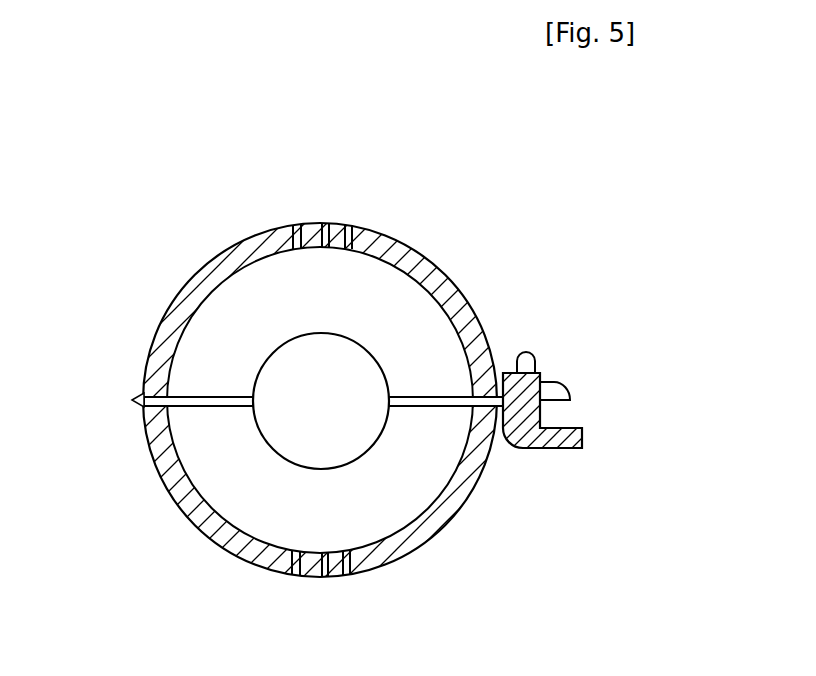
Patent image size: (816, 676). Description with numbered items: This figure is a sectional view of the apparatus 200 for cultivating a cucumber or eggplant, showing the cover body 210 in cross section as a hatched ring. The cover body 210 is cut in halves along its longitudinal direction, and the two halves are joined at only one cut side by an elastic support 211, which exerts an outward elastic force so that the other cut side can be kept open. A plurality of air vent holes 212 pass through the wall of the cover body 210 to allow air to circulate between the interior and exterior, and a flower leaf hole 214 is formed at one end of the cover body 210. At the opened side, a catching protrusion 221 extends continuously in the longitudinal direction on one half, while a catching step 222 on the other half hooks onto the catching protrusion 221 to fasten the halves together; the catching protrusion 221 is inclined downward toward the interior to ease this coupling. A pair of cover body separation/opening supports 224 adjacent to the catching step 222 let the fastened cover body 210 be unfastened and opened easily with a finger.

The apparatus for cultivating a cucumber 200 is at (354, 140).
The cover body 210 is at (217, 265).
The elastic support 211 is at (132, 400).
The air vent holes 212 is at (293, 223).
The flower leaf hole 214 is at (293, 435).
The catching protrusion 221 is at (515, 425).
The catching step 222 is at (520, 450).
The cover body separation/opening support 224 is at (580, 432).